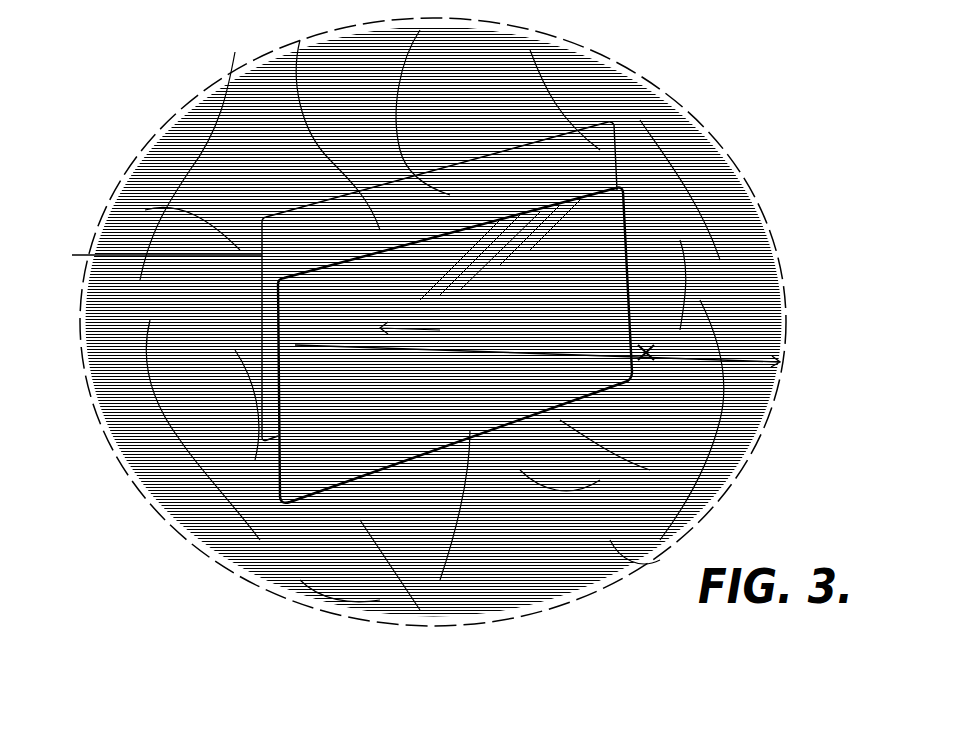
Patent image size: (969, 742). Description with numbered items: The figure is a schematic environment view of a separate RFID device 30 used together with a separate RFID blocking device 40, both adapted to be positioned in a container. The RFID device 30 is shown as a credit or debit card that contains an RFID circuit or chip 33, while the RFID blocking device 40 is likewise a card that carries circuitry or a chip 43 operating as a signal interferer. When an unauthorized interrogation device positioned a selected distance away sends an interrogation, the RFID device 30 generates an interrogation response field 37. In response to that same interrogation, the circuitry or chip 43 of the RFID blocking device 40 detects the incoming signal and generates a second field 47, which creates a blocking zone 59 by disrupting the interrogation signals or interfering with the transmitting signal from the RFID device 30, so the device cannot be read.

The RFID device 30 is at (277, 498).
The RFID circuit or chip 33 is at (295, 345).
The interrogation response field 37 is at (624, 578).
The RFID blocking device 40 is at (262, 218).
The circuitry or chip 43 is at (151, 253).
The second field 47 is at (240, 65).
The blocking zone 59 is at (614, 106).